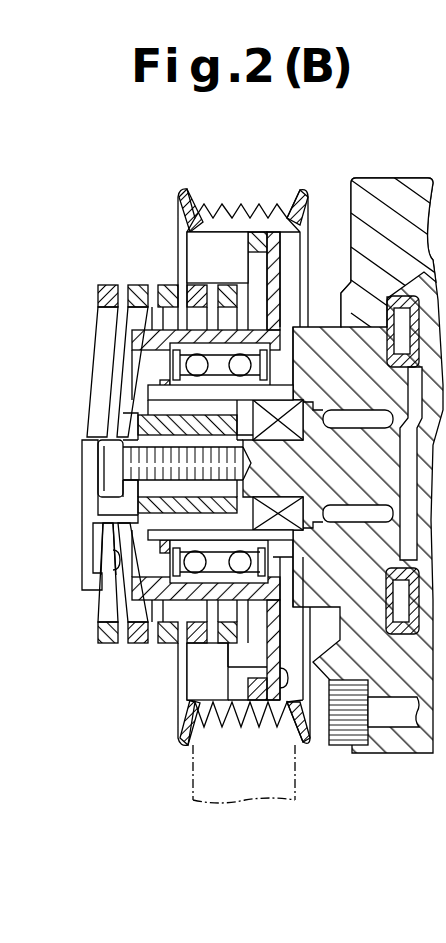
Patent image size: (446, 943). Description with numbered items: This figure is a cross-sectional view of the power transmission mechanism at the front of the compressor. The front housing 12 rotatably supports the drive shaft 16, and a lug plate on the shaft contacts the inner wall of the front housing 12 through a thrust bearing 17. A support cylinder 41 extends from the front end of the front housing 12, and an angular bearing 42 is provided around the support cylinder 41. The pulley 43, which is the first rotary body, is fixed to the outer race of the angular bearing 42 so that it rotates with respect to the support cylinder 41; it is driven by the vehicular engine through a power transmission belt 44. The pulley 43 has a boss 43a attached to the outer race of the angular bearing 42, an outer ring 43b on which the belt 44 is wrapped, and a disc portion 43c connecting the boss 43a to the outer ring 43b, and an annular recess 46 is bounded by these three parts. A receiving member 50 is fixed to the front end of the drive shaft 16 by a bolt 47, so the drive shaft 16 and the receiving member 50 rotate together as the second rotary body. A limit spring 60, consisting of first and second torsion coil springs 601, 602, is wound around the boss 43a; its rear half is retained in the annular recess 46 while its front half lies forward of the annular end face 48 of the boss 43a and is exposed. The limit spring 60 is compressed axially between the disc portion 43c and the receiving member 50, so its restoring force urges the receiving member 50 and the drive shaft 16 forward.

The front housing 12 is at (386, 190).
The drive shaft 16 is at (350, 481).
The thrust bearing 17 is at (393, 338).
The support cylinder 41 is at (152, 393).
The angular bearing 42 is at (198, 368).
The pulley 43 is at (265, 200).
The boss 43a is at (148, 334).
The outer ring 43b is at (189, 190).
The disc portion 43c is at (274, 262).
The power transmission belt 44 is at (193, 768).
The annular recess 46 is at (232, 271).
The bolt 47 is at (108, 466).
The annular end face 48 is at (116, 598).
The receiving member 50 is at (82, 522).
The limit spring 60 is at (165, 229).
The first torsion coil spring 601 is at (145, 285).
The second torsion coil spring 602 is at (105, 285).